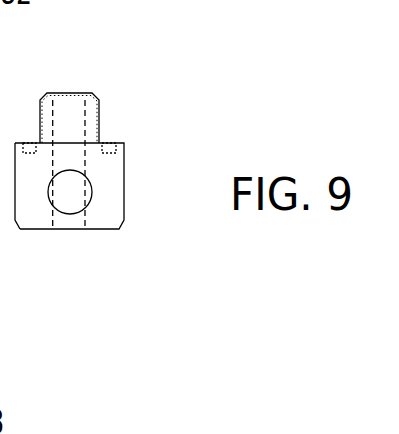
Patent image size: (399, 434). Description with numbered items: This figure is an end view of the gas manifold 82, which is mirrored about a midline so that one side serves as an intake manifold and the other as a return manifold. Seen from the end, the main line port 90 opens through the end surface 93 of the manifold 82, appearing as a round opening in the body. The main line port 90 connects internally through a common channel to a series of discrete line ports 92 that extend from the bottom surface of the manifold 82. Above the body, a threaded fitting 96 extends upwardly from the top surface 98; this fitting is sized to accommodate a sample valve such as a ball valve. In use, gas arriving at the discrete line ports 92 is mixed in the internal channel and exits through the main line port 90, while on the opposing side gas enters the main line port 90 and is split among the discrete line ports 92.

The gas manifold 82 is at (93, 189).
The main line port 90 is at (67, 205).
The discrete line ports 92 is at (80, 230).
The end surface 93 is at (32, 218).
The threaded fitting 96 is at (70, 93).
The top surface 98 is at (121, 145).